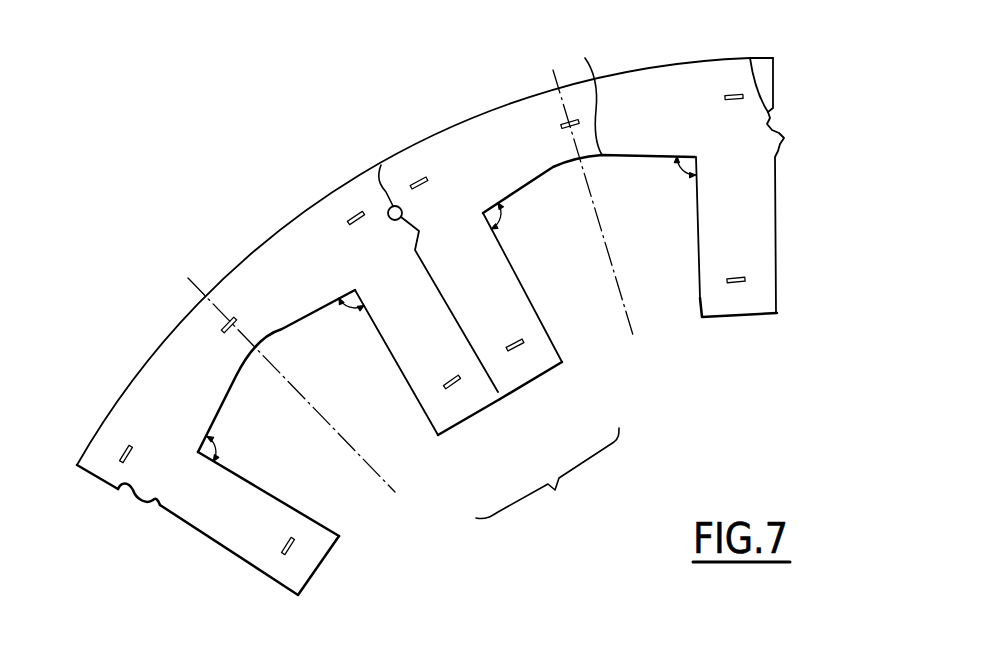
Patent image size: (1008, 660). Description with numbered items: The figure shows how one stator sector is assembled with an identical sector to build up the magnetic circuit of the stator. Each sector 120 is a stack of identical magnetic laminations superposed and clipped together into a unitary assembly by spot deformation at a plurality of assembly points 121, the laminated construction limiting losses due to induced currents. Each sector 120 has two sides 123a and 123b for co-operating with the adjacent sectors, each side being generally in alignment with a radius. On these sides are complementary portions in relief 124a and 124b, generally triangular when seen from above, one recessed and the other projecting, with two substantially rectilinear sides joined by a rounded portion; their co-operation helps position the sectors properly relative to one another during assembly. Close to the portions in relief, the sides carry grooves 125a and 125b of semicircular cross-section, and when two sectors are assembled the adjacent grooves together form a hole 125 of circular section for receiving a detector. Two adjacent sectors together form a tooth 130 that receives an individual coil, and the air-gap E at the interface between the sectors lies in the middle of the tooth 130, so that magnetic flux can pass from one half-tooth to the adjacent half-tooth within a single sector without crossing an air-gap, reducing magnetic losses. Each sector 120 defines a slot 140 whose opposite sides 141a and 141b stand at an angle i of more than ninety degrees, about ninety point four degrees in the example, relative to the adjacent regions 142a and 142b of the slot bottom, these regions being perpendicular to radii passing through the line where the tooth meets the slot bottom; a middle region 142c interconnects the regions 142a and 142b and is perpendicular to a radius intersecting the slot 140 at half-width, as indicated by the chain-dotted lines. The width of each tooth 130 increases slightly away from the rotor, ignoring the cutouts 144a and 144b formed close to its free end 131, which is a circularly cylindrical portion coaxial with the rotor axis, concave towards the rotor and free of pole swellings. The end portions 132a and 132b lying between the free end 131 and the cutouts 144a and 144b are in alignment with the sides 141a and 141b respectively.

The sector 120 is at (487, 138).
The assembly point 121 is at (350, 212).
The side of sector 123a is at (195, 535).
The side of sector 123b is at (447, 300).
The portion in relief 124a is at (158, 505).
The portion in relief 124b is at (779, 140).
The hole 125 is at (394, 220).
The groove 125a is at (750, 58).
The groove 125b is at (402, 215).
The tooth 130 is at (547, 476).
The free end of tooth 131 is at (514, 389).
The end portion of tooth 132a is at (563, 367).
The end portion of tooth 132b is at (439, 436).
The slot 140 is at (303, 440).
The side of slot 141a is at (276, 492).
The side of slot 141b is at (698, 250).
The region of slot bottom 142a is at (560, 127).
The region of slot bottom 142b is at (652, 155).
The middle region of slot bottom 142c is at (592, 89).
The cutout 144a is at (338, 535).
The cutout 144b is at (437, 436).
The air-gap E is at (438, 281).
The angle i is at (451, 309).